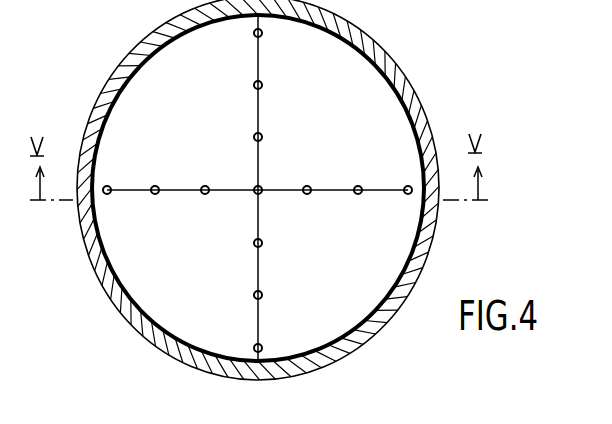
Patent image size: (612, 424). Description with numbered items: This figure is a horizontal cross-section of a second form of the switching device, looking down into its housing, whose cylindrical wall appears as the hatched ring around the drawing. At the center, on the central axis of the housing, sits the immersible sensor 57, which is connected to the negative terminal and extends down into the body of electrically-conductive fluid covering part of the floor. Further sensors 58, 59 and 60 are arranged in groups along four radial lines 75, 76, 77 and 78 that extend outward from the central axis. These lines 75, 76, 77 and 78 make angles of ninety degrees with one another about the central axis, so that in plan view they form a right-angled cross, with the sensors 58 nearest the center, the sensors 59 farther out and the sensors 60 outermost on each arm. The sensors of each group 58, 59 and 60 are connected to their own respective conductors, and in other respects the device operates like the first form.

The immersible sensor 57 is at (254, 186).
The sensor 58 is at (261, 135).
The sensor 59 is at (253, 86).
The sensor 60 is at (262, 34).
The radial line 75 is at (176, 193).
The radial line 76 is at (256, 109).
The radial line 77 is at (333, 193).
The radial line 78 is at (257, 322).